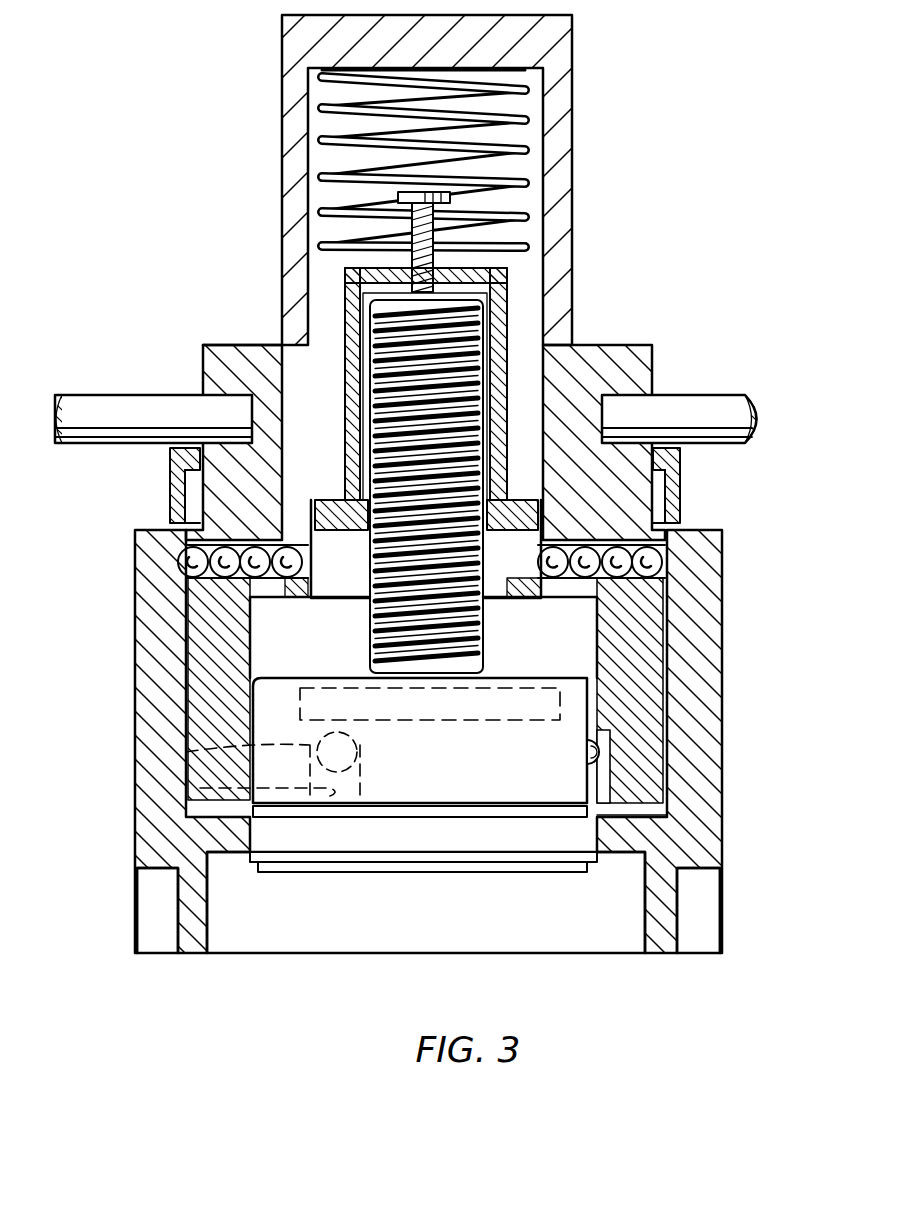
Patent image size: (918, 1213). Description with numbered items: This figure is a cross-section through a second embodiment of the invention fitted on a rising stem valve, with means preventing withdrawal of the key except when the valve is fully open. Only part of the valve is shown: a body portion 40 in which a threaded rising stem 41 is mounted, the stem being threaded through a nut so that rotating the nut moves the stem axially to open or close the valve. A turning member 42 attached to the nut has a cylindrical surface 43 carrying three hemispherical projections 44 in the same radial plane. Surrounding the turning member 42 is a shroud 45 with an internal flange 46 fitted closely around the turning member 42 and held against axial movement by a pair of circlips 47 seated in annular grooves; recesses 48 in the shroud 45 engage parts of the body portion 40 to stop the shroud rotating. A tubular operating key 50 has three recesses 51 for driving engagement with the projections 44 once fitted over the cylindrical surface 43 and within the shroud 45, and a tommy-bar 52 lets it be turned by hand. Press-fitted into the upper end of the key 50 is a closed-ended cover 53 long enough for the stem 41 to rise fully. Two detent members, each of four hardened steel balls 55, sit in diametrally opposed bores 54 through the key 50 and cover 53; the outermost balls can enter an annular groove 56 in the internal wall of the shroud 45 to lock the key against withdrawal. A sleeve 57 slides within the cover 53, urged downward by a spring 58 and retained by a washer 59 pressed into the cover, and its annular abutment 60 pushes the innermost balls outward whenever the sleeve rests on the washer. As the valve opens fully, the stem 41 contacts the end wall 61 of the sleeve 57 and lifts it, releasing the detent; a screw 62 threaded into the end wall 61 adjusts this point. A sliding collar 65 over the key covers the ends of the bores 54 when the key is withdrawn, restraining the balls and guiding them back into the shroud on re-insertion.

The body portion 40 is at (250, 920).
The threaded rising stem 41 is at (498, 348).
The turning member 42 is at (320, 835).
The cylindrical surface 43 is at (578, 693).
The hemispherical projections 44 is at (310, 745).
The shroud 45 is at (160, 665).
The internal flange 46 is at (615, 838).
The circlips 47 is at (600, 816).
The recesses 48 is at (150, 920).
The tubular operating key 50 is at (192, 364).
The recesses 51 is at (612, 752).
The tommy-bar 52 is at (720, 395).
The cover 53 is at (562, 227).
The bores 54 is at (672, 543).
The hardened steel balls 55 is at (186, 546).
The annular groove 56 is at (186, 560).
The sleeve 57 is at (507, 378).
The spring 58 is at (523, 152).
The washer 59 is at (335, 600).
The annular abutment 60 is at (522, 583).
The end wall 61 is at (350, 296).
The screw 62 is at (335, 226).
The sliding collar 65 is at (168, 480).